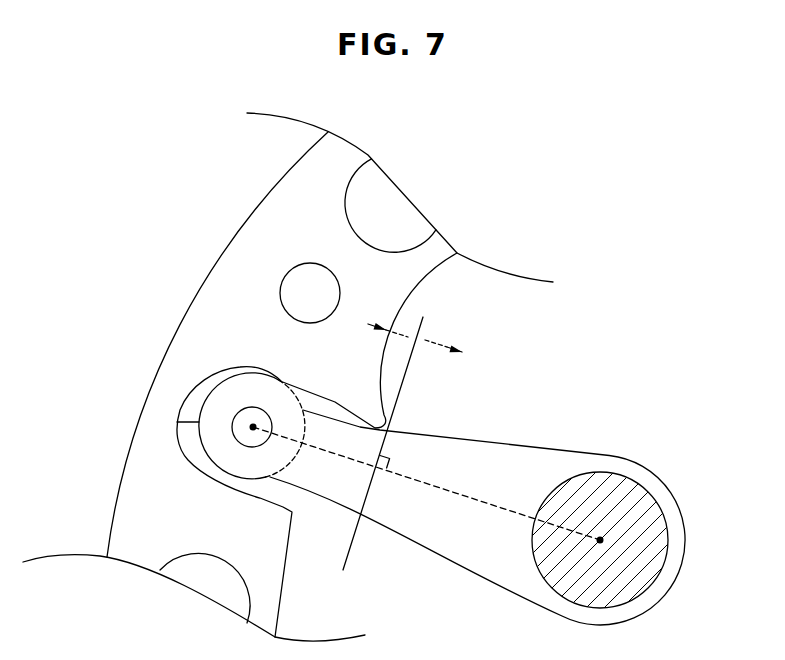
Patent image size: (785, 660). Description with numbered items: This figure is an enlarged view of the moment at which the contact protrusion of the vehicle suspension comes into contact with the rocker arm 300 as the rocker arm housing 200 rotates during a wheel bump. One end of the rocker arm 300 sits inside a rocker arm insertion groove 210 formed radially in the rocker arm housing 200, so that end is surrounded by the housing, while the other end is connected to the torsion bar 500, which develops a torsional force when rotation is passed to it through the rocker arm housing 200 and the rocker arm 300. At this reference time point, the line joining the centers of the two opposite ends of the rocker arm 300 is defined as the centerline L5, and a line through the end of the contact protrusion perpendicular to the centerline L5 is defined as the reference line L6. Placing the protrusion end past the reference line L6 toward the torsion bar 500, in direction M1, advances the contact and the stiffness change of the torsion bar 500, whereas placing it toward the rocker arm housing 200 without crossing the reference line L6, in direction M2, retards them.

The rocker arm housing 200 is at (262, 233).
The rocker arm insertion groove 210 is at (199, 422).
The rocker arm 300 is at (469, 522).
The torsion bar 500 is at (630, 548).
The centerline L5 is at (426, 483).
The reference line L6 is at (375, 457).
The direction M1 is at (462, 352).
The direction M2 is at (372, 324).